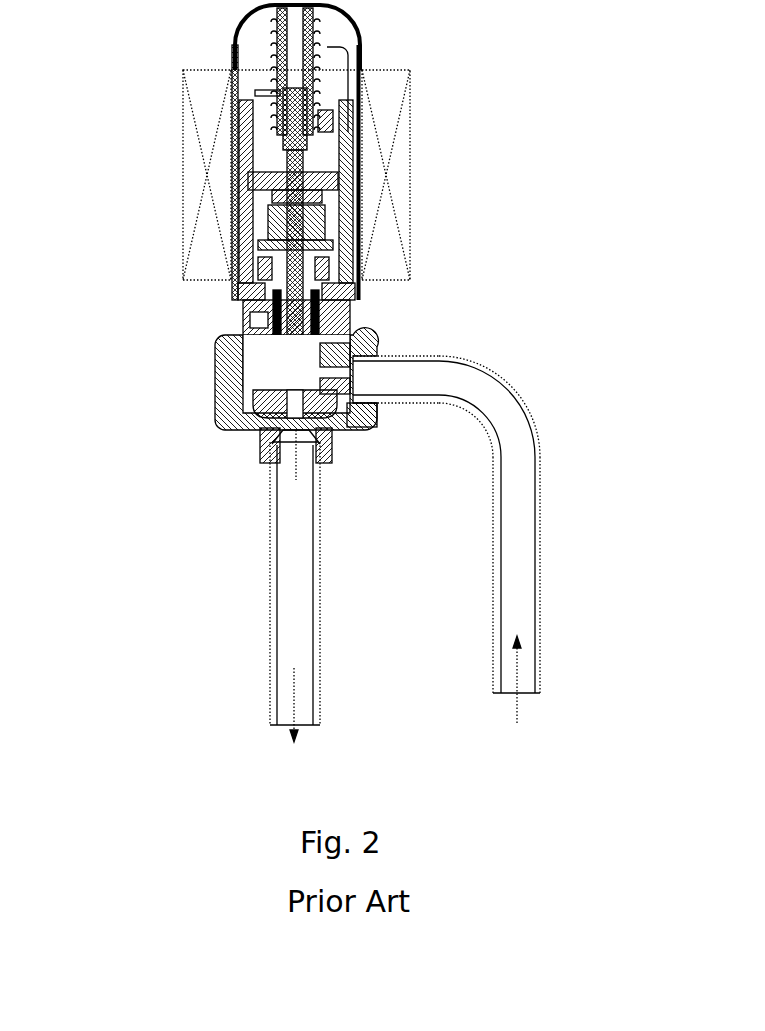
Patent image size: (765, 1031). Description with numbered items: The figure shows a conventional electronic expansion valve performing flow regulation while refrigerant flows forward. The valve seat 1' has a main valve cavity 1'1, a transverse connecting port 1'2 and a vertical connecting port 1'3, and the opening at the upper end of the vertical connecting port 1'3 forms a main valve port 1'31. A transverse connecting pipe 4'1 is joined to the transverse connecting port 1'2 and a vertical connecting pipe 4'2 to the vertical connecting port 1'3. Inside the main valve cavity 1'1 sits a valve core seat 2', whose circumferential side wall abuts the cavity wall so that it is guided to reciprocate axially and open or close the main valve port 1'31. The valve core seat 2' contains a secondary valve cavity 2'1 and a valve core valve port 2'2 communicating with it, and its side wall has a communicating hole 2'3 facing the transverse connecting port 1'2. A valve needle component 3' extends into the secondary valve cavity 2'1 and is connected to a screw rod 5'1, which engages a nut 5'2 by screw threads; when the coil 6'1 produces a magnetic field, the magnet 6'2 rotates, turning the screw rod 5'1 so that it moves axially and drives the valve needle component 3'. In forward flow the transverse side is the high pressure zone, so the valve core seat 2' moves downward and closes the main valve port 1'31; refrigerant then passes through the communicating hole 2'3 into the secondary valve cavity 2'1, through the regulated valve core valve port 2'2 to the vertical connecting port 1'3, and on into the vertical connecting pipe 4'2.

The valve seat 1' is at (253, 379).
The main valve cavity 1'1 is at (229, 397).
The transverse connecting port 1'2 is at (398, 440).
The vertical connecting port 1'3 is at (234, 470).
The main valve port 1'31 is at (232, 450).
The valve core seat 2' is at (445, 388).
The secondary valve cavity 2'1 is at (406, 322).
The valve core valve port 2'2 is at (380, 474).
The communicating hole 2'3 is at (378, 379).
The valve needle component 3' is at (238, 336).
The transverse connecting pipe 4'1 is at (561, 590).
The vertical connecting pipe 4'2 is at (235, 586).
The screw rod 5'1 is at (200, 226).
The nut 5'2 is at (182, 277).
The coil 6'1 is at (231, 175).
The magnet 6'2 is at (205, 152).